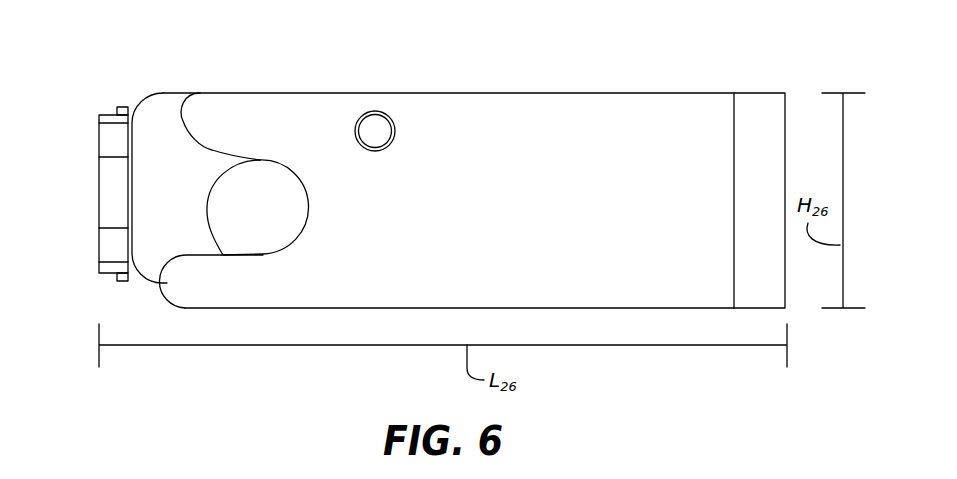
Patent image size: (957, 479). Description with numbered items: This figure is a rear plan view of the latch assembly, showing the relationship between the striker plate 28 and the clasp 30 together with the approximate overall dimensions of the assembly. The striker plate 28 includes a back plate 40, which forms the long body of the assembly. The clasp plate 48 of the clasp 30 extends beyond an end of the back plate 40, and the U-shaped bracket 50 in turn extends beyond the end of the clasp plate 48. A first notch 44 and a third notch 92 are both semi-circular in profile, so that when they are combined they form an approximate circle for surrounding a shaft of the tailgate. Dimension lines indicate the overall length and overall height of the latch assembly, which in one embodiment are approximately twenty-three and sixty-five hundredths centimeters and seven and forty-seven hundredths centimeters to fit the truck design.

The striker plate 28 is at (607, 88).
The clasp 30 is at (177, 88).
The back plate 40 is at (490, 176).
The first notch 44 is at (295, 230).
The clasp plate 48 is at (170, 155).
The U-shaped bracket 50 is at (104, 177).
The third notch 92 is at (207, 196).